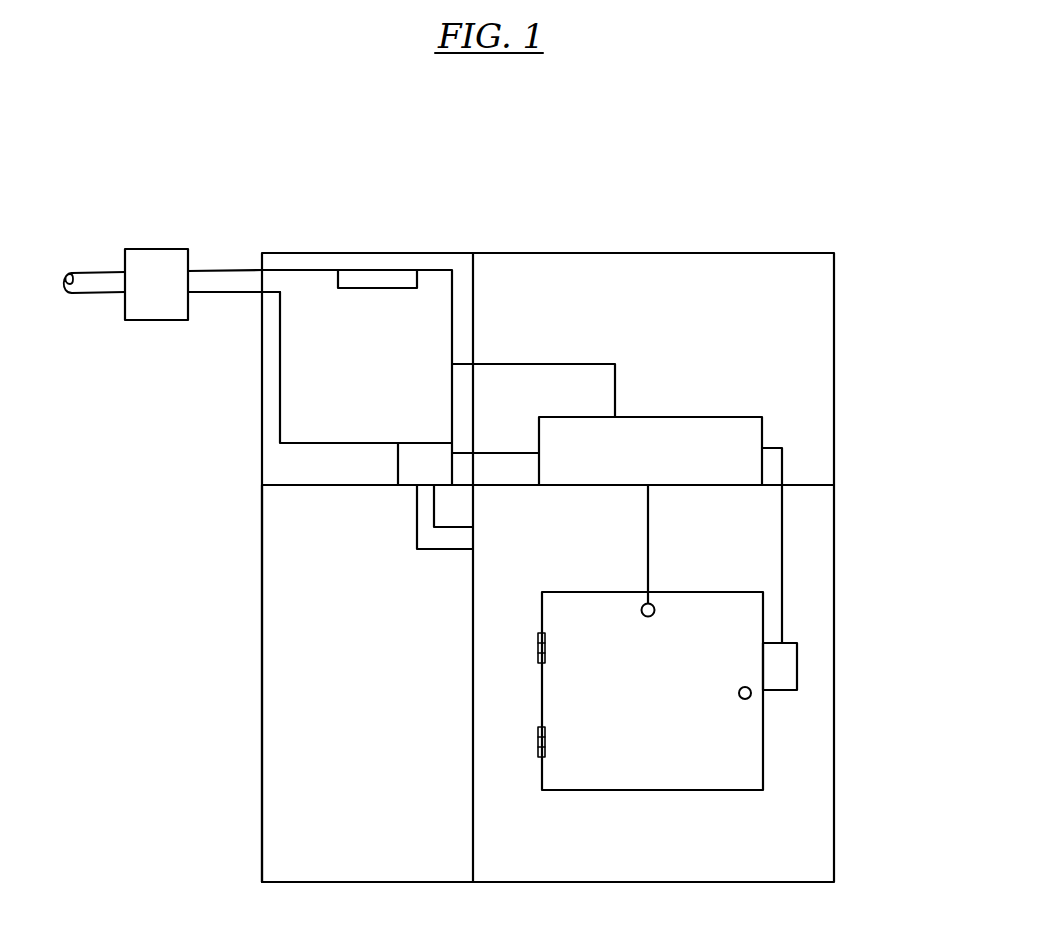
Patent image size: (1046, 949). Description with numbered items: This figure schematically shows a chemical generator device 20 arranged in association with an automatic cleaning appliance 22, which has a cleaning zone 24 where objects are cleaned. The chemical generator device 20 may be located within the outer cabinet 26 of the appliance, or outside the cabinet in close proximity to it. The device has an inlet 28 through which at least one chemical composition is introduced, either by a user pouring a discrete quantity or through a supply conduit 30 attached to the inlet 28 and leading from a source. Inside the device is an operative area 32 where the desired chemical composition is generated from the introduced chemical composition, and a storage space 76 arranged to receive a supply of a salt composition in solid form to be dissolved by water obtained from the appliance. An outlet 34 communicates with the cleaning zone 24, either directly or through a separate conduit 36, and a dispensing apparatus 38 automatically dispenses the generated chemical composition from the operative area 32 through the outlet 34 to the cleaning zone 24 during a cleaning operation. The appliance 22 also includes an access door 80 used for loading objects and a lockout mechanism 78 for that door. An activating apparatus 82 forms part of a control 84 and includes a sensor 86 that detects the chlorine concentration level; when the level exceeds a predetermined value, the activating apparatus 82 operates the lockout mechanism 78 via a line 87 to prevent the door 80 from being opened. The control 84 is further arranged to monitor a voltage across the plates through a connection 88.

The chemical generator device 20 is at (356, 248).
The automatic cleaning appliance 22 is at (846, 491).
The cleaning zone 24 is at (740, 742).
The outer cabinet 26 is at (261, 630).
The inlet 28 is at (262, 268).
The supply conduit 30 is at (231, 293).
The operative area 32 is at (420, 312).
The outlet 34 is at (412, 487).
The conduit 36 is at (437, 551).
The dispensing apparatus 38 is at (412, 458).
The storage space 76 is at (378, 275).
The lockout mechanism 78 is at (790, 660).
The access door 80 is at (748, 637).
The activating apparatus 82 is at (745, 432).
The control 84 is at (674, 413).
The sensor 86 is at (651, 603).
The line 87 is at (783, 556).
The connection 88 is at (528, 362).